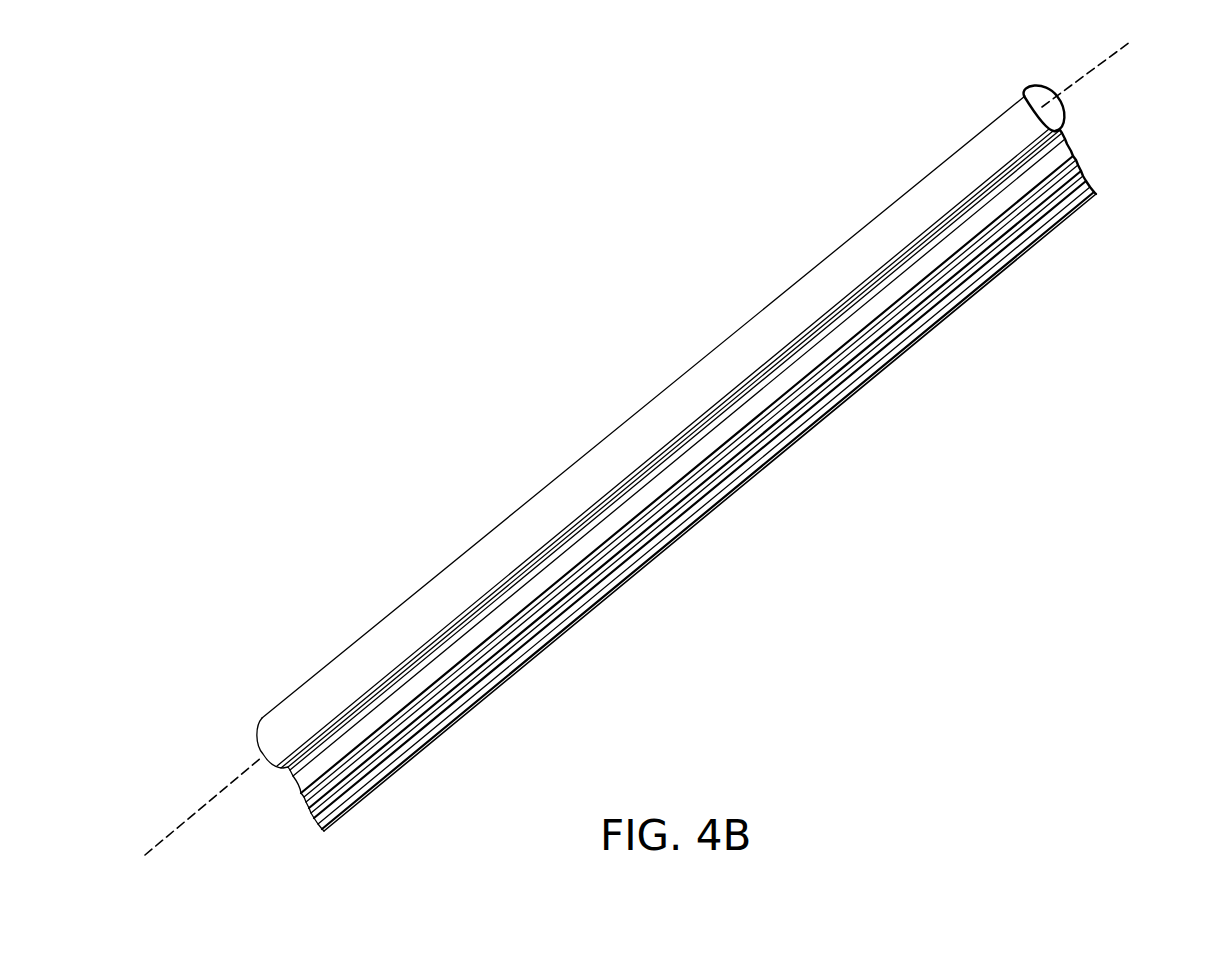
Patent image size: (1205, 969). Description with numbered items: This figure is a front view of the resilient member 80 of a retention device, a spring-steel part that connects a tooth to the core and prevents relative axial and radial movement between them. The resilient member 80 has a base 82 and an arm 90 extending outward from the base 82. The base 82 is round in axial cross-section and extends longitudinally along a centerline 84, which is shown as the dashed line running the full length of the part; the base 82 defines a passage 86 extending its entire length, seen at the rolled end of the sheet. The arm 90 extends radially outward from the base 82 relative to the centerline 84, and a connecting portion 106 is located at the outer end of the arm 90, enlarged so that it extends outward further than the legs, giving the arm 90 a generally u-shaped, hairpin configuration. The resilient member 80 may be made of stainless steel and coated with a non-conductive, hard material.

The resilient member 80 is at (630, 373).
The base 82 is at (972, 134).
The centerline 84 is at (185, 822).
The passage 86 is at (1048, 105).
The arm 90 is at (1072, 150).
The connecting portion 106 is at (1092, 180).